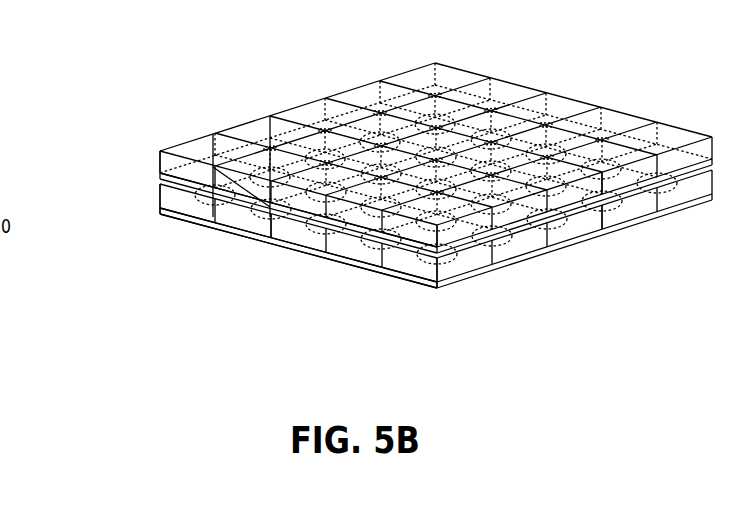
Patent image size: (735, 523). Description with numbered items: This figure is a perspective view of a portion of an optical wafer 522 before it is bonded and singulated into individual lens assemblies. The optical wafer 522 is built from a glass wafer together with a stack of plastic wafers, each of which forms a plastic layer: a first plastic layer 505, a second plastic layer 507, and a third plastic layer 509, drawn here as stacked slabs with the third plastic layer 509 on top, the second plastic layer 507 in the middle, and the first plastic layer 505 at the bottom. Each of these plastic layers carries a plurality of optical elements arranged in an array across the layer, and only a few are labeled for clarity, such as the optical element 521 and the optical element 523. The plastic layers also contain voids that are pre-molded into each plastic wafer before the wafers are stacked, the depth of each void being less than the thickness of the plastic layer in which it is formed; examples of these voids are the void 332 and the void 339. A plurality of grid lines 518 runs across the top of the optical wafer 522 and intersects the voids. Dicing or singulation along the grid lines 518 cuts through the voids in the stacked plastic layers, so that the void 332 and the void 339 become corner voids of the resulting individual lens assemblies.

The optical wafer 522 is at (656, 22).
The third plastic layer 509 is at (158, 161).
The second plastic layer 507 is at (158, 184).
The first plastic layer 505 is at (158, 209).
The optical element 521 is at (270, 207).
The grid lines 518 is at (347, 125).
The void 332 is at (213, 167).
The optical element 523 is at (214, 226).
The void 339 is at (272, 238).